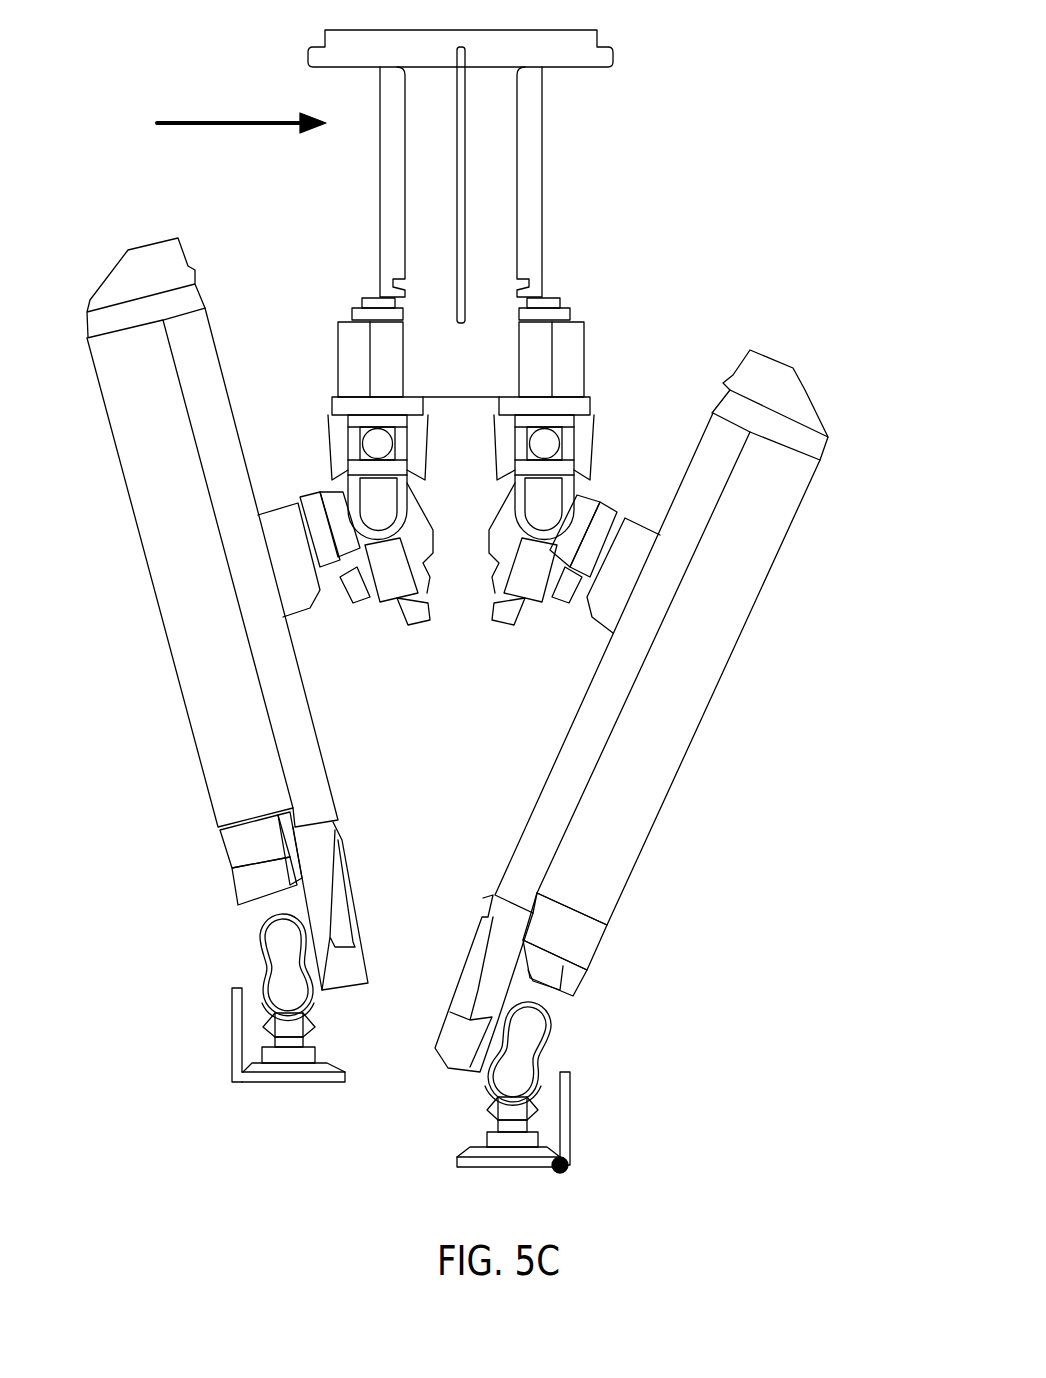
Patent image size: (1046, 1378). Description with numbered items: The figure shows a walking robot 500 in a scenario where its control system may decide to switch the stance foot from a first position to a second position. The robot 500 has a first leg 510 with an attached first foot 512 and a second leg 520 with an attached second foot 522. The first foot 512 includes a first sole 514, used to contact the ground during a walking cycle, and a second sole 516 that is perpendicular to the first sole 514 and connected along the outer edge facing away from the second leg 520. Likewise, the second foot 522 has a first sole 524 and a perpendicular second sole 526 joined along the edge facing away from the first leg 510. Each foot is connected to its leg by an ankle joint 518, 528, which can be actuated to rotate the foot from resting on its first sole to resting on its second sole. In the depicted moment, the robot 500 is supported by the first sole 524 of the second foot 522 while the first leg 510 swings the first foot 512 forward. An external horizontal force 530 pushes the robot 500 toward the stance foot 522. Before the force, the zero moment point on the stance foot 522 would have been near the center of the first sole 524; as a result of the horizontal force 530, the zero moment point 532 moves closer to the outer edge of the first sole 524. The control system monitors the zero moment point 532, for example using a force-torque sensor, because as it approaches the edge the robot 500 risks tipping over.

The robot 500 is at (578, 220).
The first leg 510 is at (163, 492).
The first foot 512 is at (232, 962).
The first sole 514 is at (288, 1077).
The second sole 516 is at (233, 1012).
The ankle joint 518 is at (315, 1013).
The second leg 520 is at (748, 558).
The second foot 522 is at (565, 1042).
The first sole 524 is at (513, 1162).
The second sole 526 is at (572, 1110).
The ankle joint 528 is at (493, 1088).
The external horizontal force 530 is at (200, 148).
The ZMP 532 is at (567, 1165).